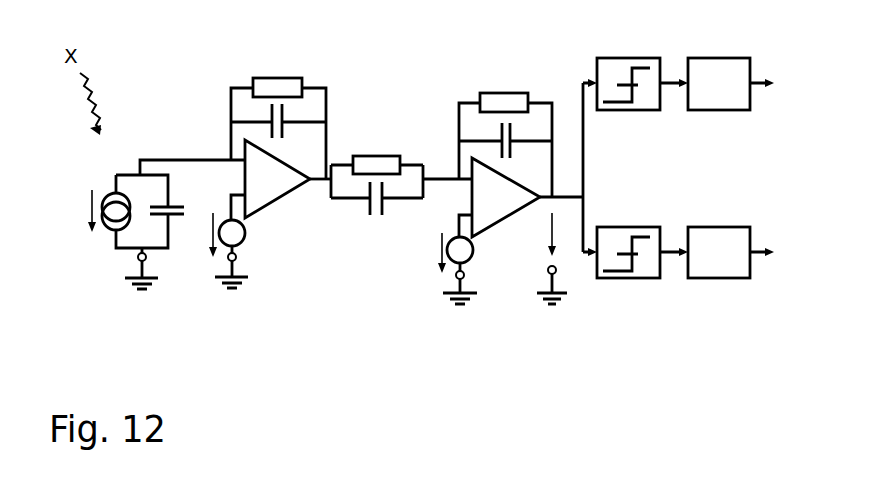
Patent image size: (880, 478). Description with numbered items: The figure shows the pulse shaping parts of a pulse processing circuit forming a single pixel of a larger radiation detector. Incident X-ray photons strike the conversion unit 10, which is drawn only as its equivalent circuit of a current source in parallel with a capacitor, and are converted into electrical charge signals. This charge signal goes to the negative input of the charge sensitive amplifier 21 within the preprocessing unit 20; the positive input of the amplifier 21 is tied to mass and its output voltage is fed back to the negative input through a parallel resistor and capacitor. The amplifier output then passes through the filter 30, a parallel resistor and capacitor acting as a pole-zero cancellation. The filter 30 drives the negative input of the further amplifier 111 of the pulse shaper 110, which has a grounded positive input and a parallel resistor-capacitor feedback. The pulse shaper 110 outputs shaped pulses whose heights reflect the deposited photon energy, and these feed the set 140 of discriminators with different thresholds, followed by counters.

The conversion unit 10 is at (205, 320).
The preprocessing unit 20 is at (270, 207).
The charge sensitive amplifier 21 is at (277, 192).
The filter 30 is at (428, 253).
The pulse shaper 110 is at (509, 214).
The further amplifier 111 is at (497, 215).
The set of discriminators 140 is at (765, 318).